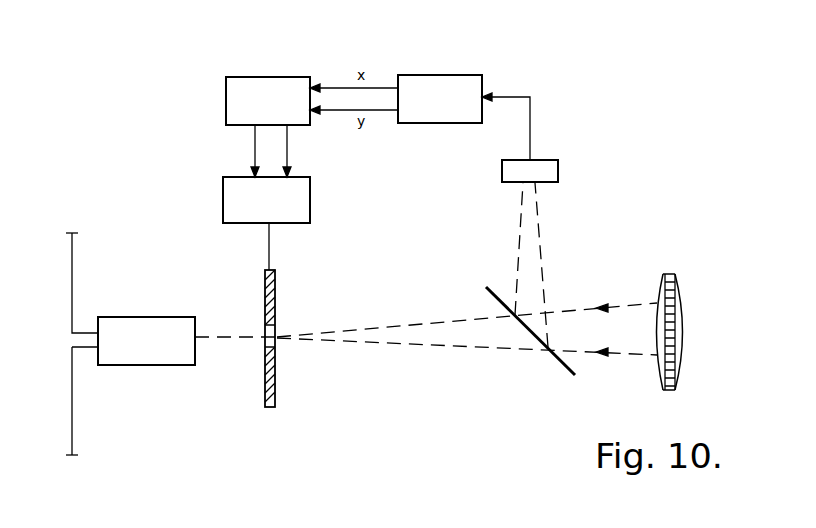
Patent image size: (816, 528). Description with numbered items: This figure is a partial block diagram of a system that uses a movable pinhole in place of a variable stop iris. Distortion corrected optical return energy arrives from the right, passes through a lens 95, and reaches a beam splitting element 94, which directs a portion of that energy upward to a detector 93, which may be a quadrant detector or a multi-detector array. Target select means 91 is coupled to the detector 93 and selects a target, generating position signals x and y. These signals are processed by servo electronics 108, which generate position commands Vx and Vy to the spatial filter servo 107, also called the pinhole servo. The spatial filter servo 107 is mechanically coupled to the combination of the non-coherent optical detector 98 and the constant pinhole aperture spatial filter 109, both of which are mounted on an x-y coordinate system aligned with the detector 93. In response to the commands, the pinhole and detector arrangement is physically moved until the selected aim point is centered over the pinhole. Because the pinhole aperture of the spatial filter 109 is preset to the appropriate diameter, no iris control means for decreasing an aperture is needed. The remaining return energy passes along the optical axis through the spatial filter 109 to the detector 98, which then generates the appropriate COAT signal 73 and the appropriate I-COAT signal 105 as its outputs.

The servo electronics 108 is at (310, 77).
The target select means 91 is at (481, 76).
The spatial filter servo 107 is at (311, 178).
The detector 93 is at (558, 160).
The constant pinhole aperture spatial filter 109 is at (276, 270).
The non-coherent optical detector 98 is at (196, 317).
The COAT signal 73 is at (71, 275).
The I-COAT signal 105 is at (70, 421).
The beam splitting element 94 is at (567, 373).
The lens 95 is at (672, 275).